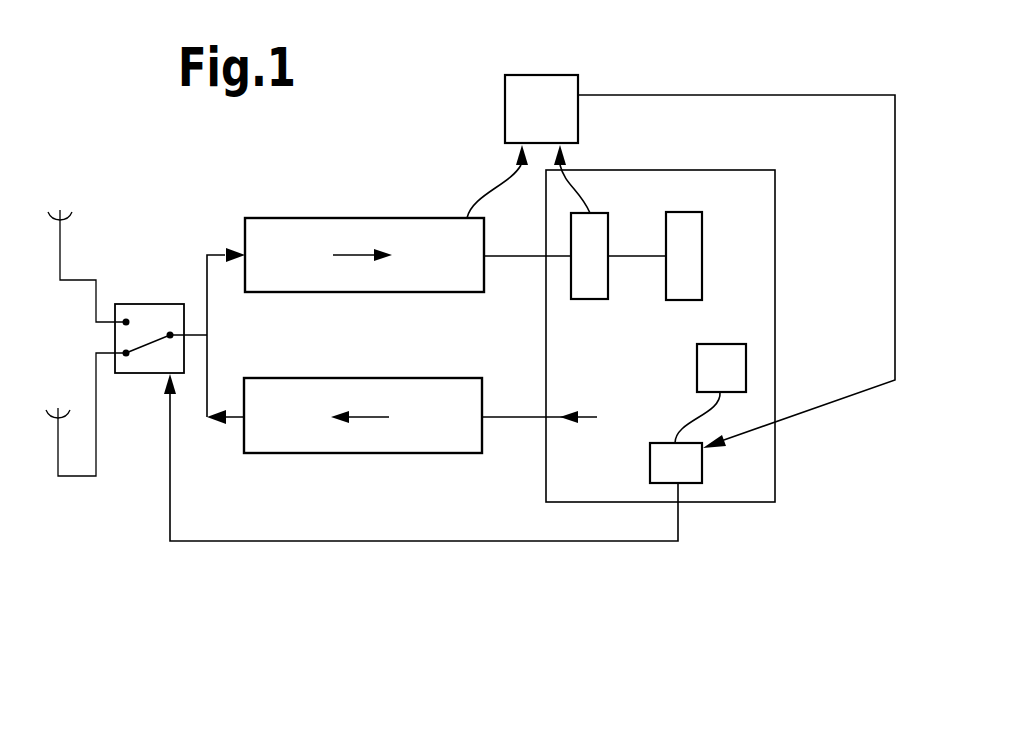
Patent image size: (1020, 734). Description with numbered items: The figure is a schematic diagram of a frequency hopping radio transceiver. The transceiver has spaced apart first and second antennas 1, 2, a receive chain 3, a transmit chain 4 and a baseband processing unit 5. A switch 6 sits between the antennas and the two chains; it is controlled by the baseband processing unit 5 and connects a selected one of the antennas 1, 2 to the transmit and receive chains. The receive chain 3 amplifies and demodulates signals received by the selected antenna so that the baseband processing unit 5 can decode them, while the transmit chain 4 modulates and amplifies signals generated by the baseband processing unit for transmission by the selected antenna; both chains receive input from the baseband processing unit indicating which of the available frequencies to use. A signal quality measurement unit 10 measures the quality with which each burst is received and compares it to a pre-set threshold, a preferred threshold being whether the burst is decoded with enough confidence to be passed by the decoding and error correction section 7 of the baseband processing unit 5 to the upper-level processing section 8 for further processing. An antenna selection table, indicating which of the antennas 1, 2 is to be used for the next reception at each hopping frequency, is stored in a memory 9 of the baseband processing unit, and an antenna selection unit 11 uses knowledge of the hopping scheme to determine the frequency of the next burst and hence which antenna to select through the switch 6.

The first antenna 1 is at (55, 255).
The second antenna 2 is at (52, 453).
The receive chain 3 is at (357, 237).
The transmit chain 4 is at (360, 442).
The baseband processing unit 5 is at (643, 180).
The switch 6 is at (146, 364).
The decoding and error correction section 7 is at (598, 245).
The upper-level processing section 8 is at (693, 235).
The memory 9 is at (738, 367).
The signal quality measurement unit 10 is at (542, 85).
The antenna selection unit 11 is at (692, 466).